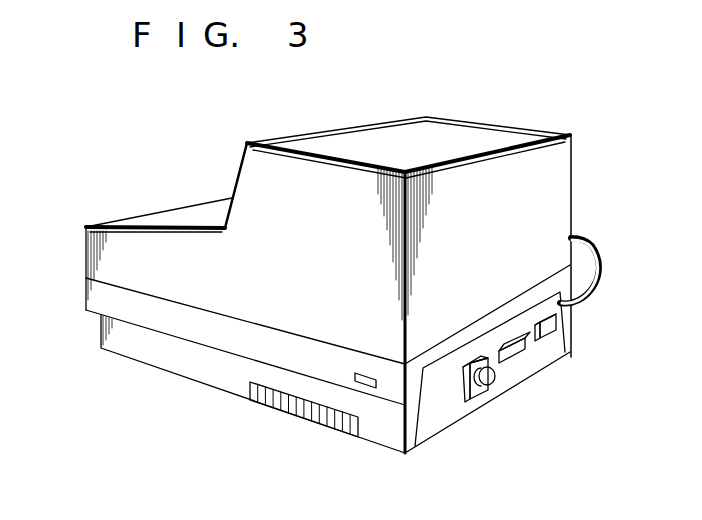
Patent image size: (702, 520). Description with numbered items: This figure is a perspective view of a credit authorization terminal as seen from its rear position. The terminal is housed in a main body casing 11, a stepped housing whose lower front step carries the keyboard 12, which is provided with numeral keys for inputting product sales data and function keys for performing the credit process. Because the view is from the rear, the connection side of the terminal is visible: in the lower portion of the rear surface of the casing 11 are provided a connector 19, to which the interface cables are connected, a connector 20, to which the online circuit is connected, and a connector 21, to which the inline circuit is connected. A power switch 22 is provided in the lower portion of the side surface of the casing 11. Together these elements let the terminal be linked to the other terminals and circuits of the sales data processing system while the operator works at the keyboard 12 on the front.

The main body casing 11 is at (509, 125).
The keyboard 12 is at (178, 212).
The connector 19 is at (557, 326).
The connector 20 is at (516, 334).
The connector 21 is at (490, 383).
The power switch 22 is at (365, 372).